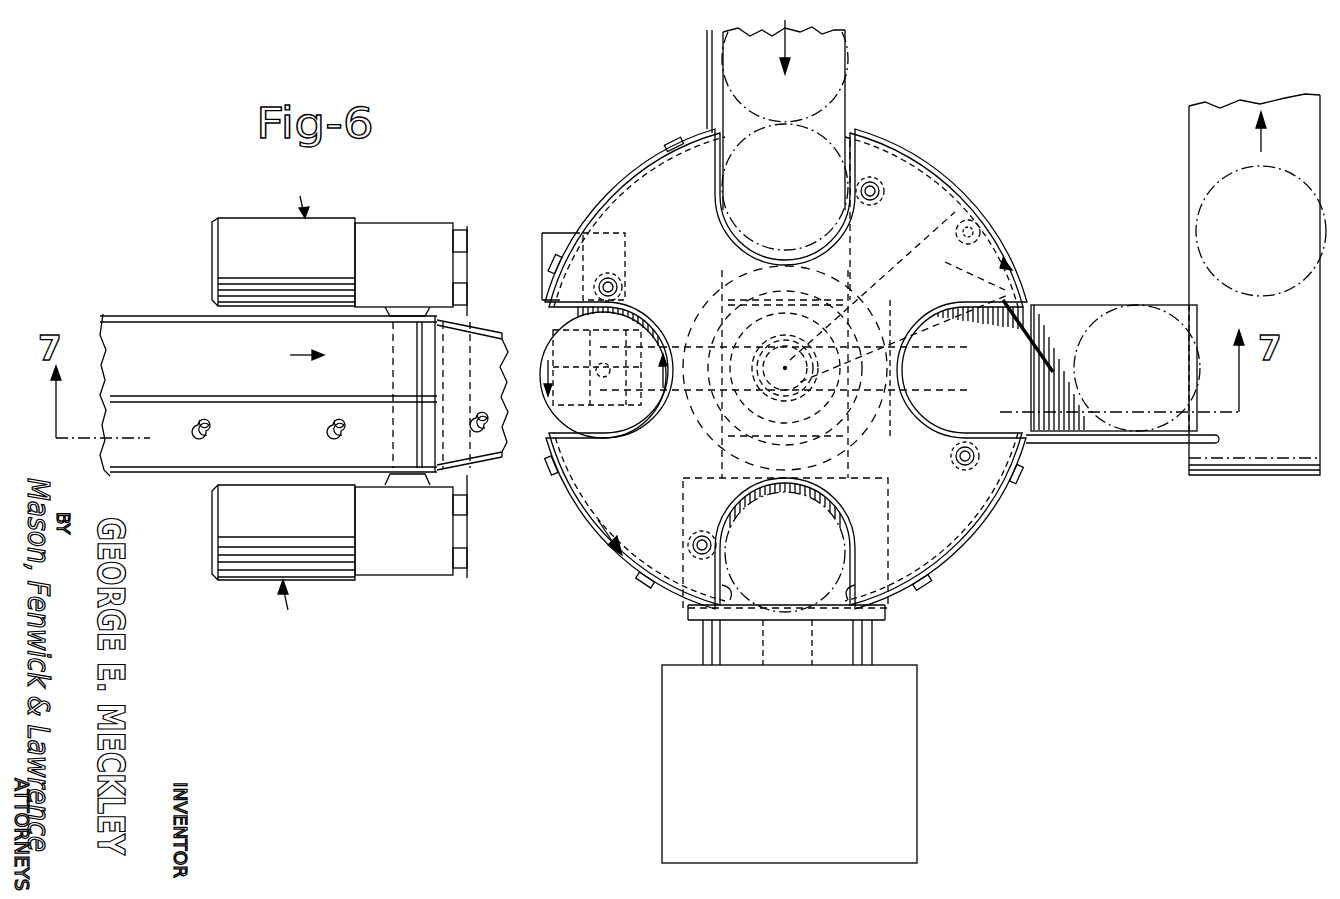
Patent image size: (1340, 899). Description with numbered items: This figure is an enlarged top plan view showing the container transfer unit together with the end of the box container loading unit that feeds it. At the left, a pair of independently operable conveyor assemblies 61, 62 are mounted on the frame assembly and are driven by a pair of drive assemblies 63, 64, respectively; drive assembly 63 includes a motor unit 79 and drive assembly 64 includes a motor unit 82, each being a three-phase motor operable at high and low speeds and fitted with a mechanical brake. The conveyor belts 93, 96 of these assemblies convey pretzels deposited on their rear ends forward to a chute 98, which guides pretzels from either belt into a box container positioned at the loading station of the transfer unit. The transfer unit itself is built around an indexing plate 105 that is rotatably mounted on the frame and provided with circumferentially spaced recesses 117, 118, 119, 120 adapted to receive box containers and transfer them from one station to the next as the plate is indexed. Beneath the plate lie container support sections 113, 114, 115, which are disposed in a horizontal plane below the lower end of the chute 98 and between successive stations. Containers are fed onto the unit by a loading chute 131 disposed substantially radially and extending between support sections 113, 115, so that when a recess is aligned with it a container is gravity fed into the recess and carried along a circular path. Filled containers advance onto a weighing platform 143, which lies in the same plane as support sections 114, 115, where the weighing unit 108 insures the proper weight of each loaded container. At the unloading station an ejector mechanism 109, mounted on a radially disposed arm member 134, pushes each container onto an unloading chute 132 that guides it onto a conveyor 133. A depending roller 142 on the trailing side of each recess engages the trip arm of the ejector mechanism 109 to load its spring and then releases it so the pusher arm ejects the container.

The conveyor assembly 61 is at (150, 332).
The conveyor assembly 62 is at (165, 462).
The drive assembly 63 is at (299, 600).
The drive assembly 64 is at (302, 197).
The motor unit 79 is at (339, 527).
The motor unit 82 is at (339, 267).
The conveyor belt 93 is at (290, 394).
The conveyor belt 96 is at (268, 432).
The chute 98 is at (515, 456).
The indexing plate 105 is at (920, 195).
The weighing unit 108 is at (789, 764).
The ejector mechanism 109 is at (1005, 262).
The container support section 113 is at (606, 188).
The container support section 114 is at (618, 534).
The container support section 115 is at (992, 508).
The recess 117 is at (1022, 326).
The recess 118 is at (848, 138).
The recess 119 is at (548, 318).
The recess 120 is at (700, 622).
The loading chute 131 is at (830, 74).
The unloading chute 132 is at (1136, 306).
The conveyor 133 is at (1197, 157).
The arm member 134 is at (905, 248).
The roller 142 is at (616, 280).
The weighing platform 143 is at (885, 611).